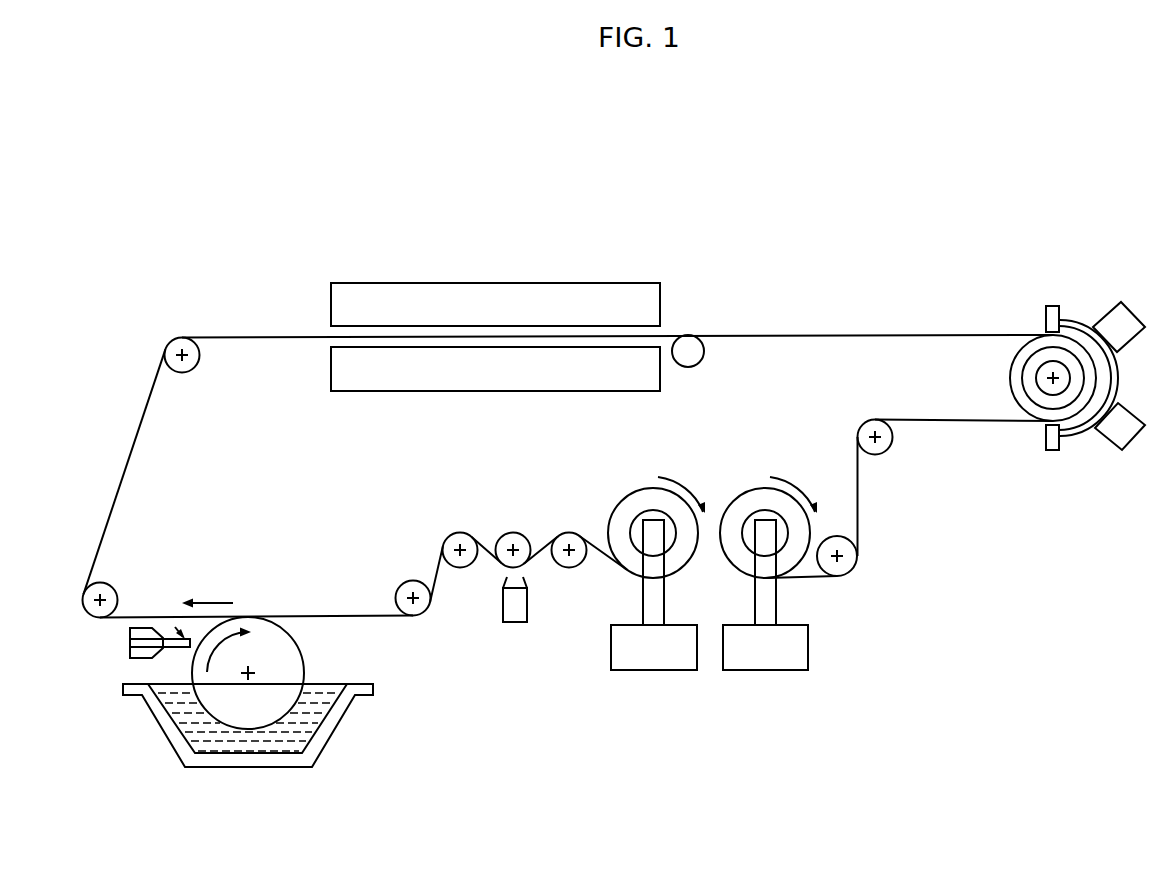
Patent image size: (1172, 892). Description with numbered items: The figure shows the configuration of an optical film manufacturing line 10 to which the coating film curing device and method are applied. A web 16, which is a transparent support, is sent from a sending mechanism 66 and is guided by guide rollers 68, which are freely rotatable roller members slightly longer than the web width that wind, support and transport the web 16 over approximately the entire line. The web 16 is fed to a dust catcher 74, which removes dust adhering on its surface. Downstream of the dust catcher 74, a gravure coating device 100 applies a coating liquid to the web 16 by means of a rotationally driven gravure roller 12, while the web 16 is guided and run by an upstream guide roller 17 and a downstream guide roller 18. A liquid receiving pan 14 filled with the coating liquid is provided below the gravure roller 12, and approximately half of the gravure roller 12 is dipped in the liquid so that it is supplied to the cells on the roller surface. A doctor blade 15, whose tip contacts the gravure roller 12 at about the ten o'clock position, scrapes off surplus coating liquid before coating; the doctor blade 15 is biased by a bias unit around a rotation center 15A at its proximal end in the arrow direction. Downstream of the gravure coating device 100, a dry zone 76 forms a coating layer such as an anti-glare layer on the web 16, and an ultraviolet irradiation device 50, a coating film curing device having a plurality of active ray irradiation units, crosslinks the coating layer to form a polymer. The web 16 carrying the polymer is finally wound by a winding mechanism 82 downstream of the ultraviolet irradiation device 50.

The optical film manufacturing line 10 is at (294, 200).
The gravure roller 12 is at (301, 654).
The liquid receiving pan 14 is at (329, 740).
The doctor blade 15 is at (174, 650).
The rotation center 15A is at (130, 646).
The web 16 is at (601, 540).
The upstream guide roller 17 is at (402, 586).
The downstream guide roller 18 is at (110, 589).
The ultraviolet irradiation device 50 is at (1057, 270).
The sending mechanism 66 is at (650, 660).
The guide rollers 68 is at (194, 367).
The dust catcher 74 is at (513, 612).
The dry zone 76 is at (413, 291).
The winding mechanism 82 is at (762, 660).
The gravure coating device 100 is at (240, 780).